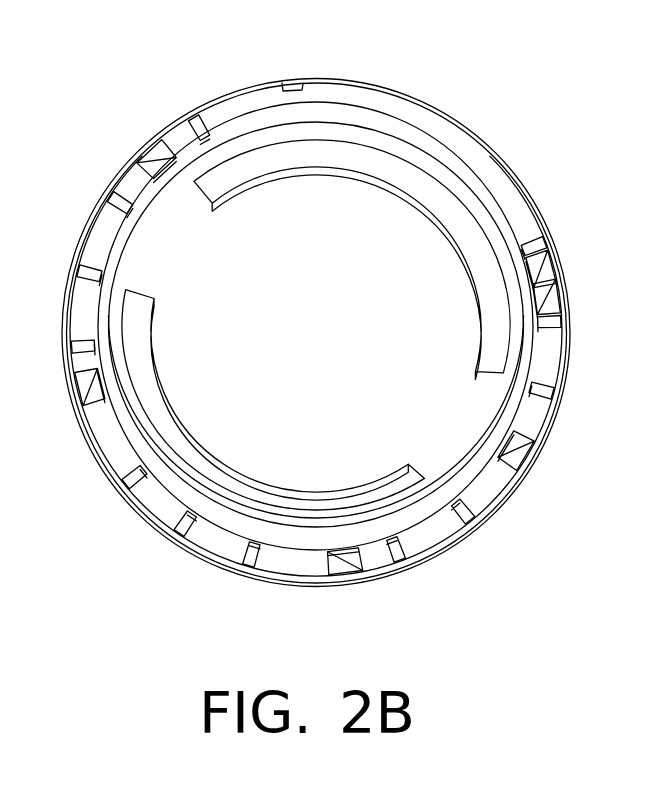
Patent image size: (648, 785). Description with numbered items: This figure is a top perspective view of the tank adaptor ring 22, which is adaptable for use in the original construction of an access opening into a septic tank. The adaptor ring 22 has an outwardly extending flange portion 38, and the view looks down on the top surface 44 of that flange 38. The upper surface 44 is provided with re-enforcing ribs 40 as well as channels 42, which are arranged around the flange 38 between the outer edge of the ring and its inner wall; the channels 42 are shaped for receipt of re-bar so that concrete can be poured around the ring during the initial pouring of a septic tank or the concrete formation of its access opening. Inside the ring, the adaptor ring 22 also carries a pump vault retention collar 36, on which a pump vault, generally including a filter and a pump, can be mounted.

The tank adaptor ring 22 is at (449, 110).
The pump vault retention collar 36 is at (257, 158).
The flange portion 38 is at (557, 396).
The re-enforcing ribs 40 is at (535, 320).
The channels 42 is at (520, 461).
The top surface 44 is at (530, 230).